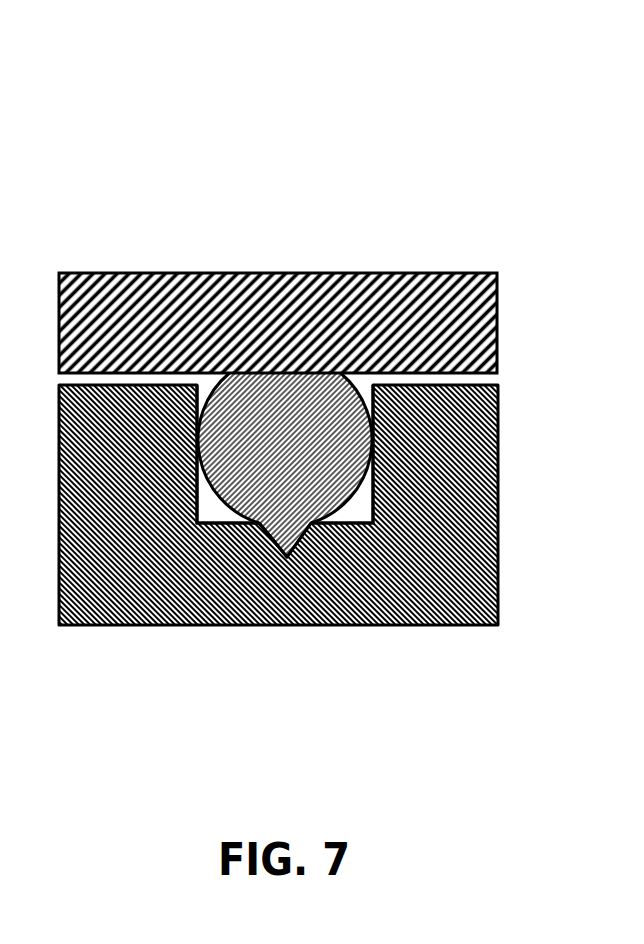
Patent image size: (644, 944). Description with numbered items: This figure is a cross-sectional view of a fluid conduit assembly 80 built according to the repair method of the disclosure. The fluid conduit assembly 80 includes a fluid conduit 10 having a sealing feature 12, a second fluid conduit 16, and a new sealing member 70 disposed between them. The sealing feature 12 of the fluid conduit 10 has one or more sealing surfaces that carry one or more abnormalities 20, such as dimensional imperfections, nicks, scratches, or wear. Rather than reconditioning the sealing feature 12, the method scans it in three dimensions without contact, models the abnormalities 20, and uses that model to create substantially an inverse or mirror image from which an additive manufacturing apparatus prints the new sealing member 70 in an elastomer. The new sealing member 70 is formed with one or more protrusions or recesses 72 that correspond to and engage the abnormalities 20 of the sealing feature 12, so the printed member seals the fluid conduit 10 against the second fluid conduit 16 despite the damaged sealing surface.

The fluid conduit 10 is at (448, 625).
The sealing feature 12 is at (375, 395).
The second fluid conduit 16 is at (128, 275).
The abnormalities 20 is at (273, 530).
The new sealing member 70 is at (318, 402).
The protrusions or recesses 72 is at (285, 533).
The fluid conduit assembly 80 is at (445, 152).